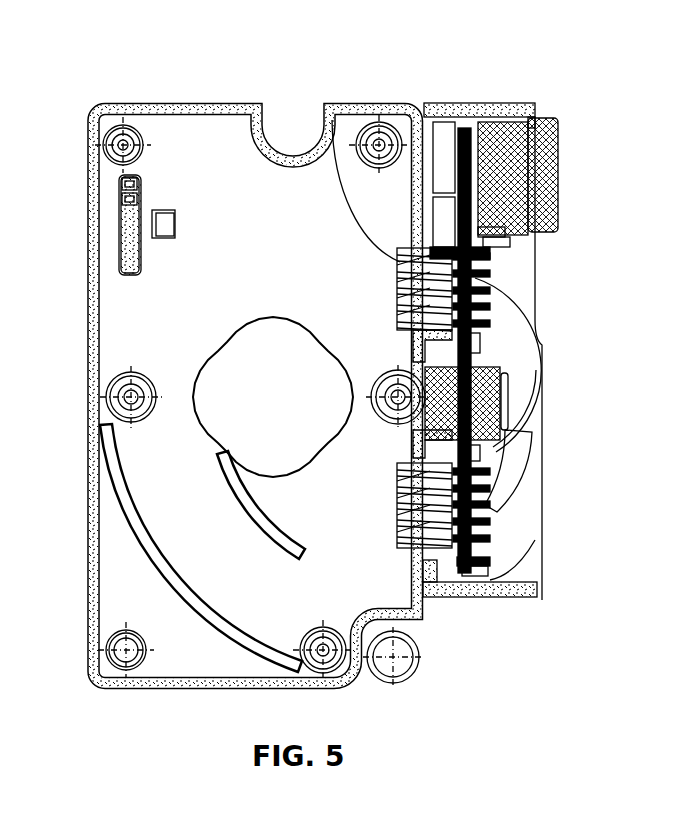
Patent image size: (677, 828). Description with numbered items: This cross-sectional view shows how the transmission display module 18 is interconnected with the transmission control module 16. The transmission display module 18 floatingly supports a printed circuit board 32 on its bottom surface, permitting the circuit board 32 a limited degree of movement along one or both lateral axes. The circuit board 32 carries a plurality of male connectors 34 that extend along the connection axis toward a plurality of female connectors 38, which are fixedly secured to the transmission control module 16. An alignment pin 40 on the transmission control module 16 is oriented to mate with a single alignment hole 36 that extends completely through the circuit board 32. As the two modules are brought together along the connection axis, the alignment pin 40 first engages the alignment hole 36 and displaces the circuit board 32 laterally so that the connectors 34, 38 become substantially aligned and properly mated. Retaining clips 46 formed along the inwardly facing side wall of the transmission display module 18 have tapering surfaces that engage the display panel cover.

The transmission control module 16 is at (162, 693).
The transmission display module 18 is at (492, 100).
The printed circuit board 32 is at (500, 540).
The electrical connector 34 is at (429, 248).
The alignment hole 36 is at (468, 358).
The mating connector 38 is at (333, 96).
The alignment pin 40 is at (507, 385).
The retaining clip 46 is at (500, 580).